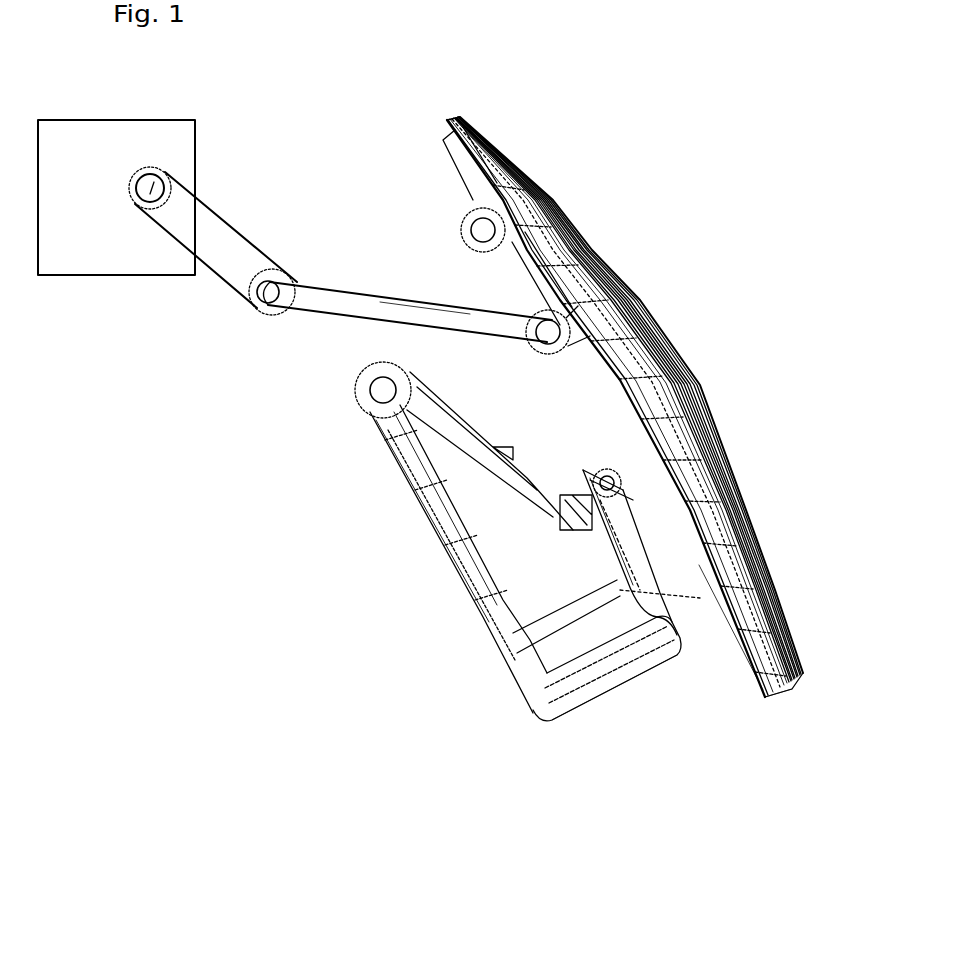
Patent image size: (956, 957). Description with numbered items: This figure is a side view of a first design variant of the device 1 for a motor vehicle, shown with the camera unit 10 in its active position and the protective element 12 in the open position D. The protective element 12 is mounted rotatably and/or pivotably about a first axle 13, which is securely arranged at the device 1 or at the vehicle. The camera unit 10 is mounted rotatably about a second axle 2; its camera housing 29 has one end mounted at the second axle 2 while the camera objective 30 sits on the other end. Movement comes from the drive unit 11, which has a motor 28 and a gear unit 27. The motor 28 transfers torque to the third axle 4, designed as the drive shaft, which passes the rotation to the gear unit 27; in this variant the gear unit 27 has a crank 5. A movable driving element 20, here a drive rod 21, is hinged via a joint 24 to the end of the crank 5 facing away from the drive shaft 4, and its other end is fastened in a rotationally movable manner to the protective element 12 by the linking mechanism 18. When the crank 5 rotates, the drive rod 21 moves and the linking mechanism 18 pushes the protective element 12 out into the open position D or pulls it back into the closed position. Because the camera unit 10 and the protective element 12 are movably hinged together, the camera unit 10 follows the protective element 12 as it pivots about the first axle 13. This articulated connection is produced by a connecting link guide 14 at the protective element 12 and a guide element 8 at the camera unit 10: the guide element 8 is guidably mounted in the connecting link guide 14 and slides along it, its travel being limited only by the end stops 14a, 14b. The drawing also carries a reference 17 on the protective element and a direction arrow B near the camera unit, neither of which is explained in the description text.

The device 1 is at (488, 92).
The second axle 2 is at (381, 392).
The third axle 4 is at (146, 200).
The crank 5 is at (215, 230).
The guide element 8 is at (608, 477).
The camera unit 10 is at (570, 673).
The drive unit 11 is at (157, 352).
The protective element 12 is at (627, 290).
The first axle 13 is at (487, 227).
The connecting link guide 14 is at (643, 520).
The end stop 14a is at (660, 597).
The end stop 14b is at (603, 468).
The wiper lip section 17 is at (707, 577).
The linking mechanism 18 is at (560, 347).
The movable driving element 20 is at (340, 303).
The drive rod 21 is at (395, 305).
The joint 24 is at (258, 305).
The gear unit 27 is at (136, 186).
The motor 28 is at (102, 267).
The camera housing 29 is at (483, 537).
The camera objective 30 is at (630, 673).
The pivot direction B is at (612, 748).
The open position D is at (800, 735).